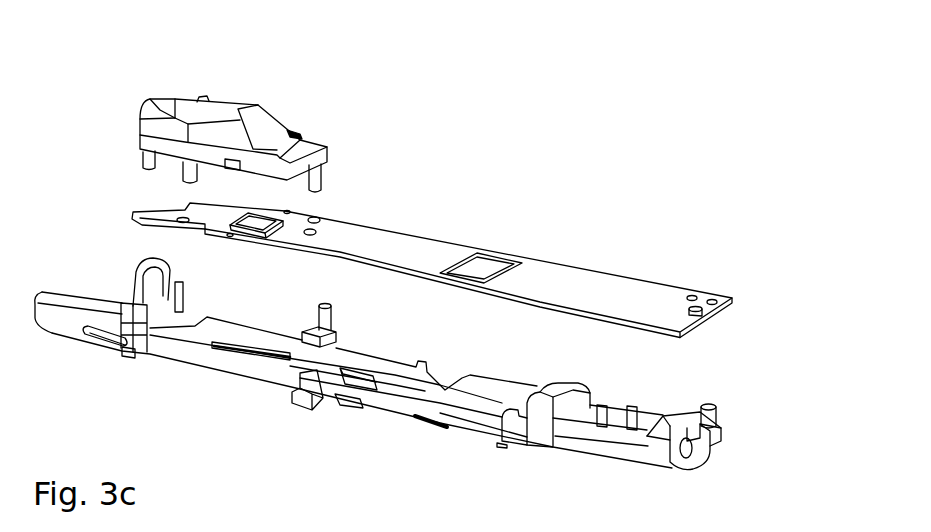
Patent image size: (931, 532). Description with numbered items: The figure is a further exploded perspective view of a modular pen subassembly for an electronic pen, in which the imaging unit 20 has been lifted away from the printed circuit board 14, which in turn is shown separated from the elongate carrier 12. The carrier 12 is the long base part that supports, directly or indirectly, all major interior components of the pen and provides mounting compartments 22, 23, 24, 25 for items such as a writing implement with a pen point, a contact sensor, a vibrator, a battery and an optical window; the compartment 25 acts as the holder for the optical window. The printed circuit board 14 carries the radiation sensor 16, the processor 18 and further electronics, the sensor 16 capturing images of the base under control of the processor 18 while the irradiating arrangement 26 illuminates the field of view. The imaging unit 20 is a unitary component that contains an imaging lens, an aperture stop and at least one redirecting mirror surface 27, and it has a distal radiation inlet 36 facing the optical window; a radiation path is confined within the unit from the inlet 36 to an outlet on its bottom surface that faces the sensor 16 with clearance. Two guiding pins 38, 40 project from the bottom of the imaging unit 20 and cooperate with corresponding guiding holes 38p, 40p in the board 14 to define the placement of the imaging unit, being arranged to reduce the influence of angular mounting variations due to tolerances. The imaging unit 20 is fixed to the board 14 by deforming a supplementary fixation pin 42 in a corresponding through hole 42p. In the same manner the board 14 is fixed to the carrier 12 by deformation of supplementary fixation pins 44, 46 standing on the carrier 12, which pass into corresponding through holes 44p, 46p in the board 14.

The elongate carrier 12 is at (431, 373).
The printed circuit board 14 is at (430, 256).
The radiation sensor 16 is at (258, 218).
The processor 18 is at (474, 262).
The imaging unit 20 is at (217, 115).
The mounting compartment 22 is at (204, 371).
The mounting compartment 23 is at (536, 440).
The mounting compartment 24 is at (618, 412).
The mounting compartment (optical window holder) 25 is at (129, 306).
The irradiating arrangement 26 is at (212, 90).
The redirecting mirror surface 27 is at (271, 123).
The radiation inlet 36 is at (139, 121).
The guiding pin 38 is at (141, 155).
The guiding hole 38p is at (136, 212).
The guiding pin 40 is at (322, 173).
The guiding hole 40p is at (318, 229).
The supplementary fixation pin 42 is at (185, 180).
The through hole 42p is at (185, 222).
The supplementary fixation pin 44 is at (328, 318).
The through hole 44p is at (319, 216).
The supplementary fixation pin 46 is at (716, 417).
The through hole 46p is at (726, 312).